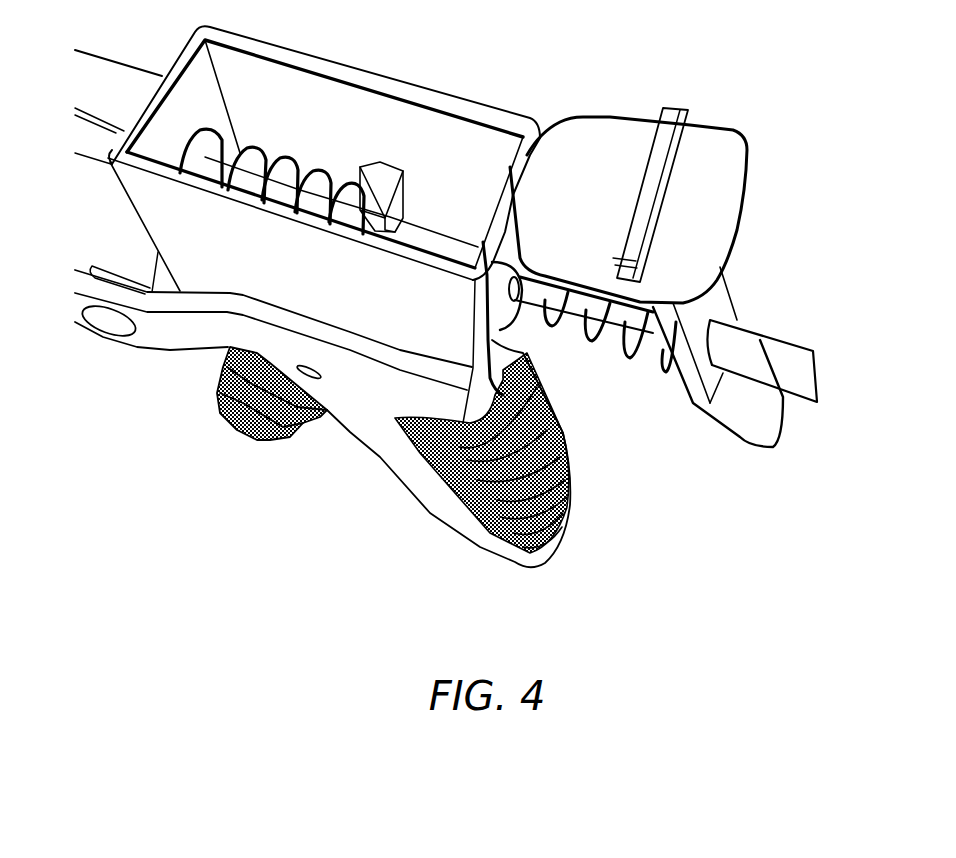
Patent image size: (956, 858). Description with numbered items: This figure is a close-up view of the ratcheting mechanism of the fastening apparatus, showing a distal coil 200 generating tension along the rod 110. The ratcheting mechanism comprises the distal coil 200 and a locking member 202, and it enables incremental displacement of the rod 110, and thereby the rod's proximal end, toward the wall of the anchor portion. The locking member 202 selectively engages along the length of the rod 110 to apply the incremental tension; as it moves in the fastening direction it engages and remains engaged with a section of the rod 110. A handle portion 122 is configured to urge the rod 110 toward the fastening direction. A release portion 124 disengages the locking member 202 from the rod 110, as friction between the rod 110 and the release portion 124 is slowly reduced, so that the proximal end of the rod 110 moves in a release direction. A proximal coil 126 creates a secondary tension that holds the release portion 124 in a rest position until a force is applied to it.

The distal coil 200 is at (327, 133).
The locking member 202 is at (392, 185).
The rod 110 is at (580, 308).
The proximal coil 126 is at (637, 367).
The release portion 124 is at (733, 417).
The handle portion 122 is at (262, 420).